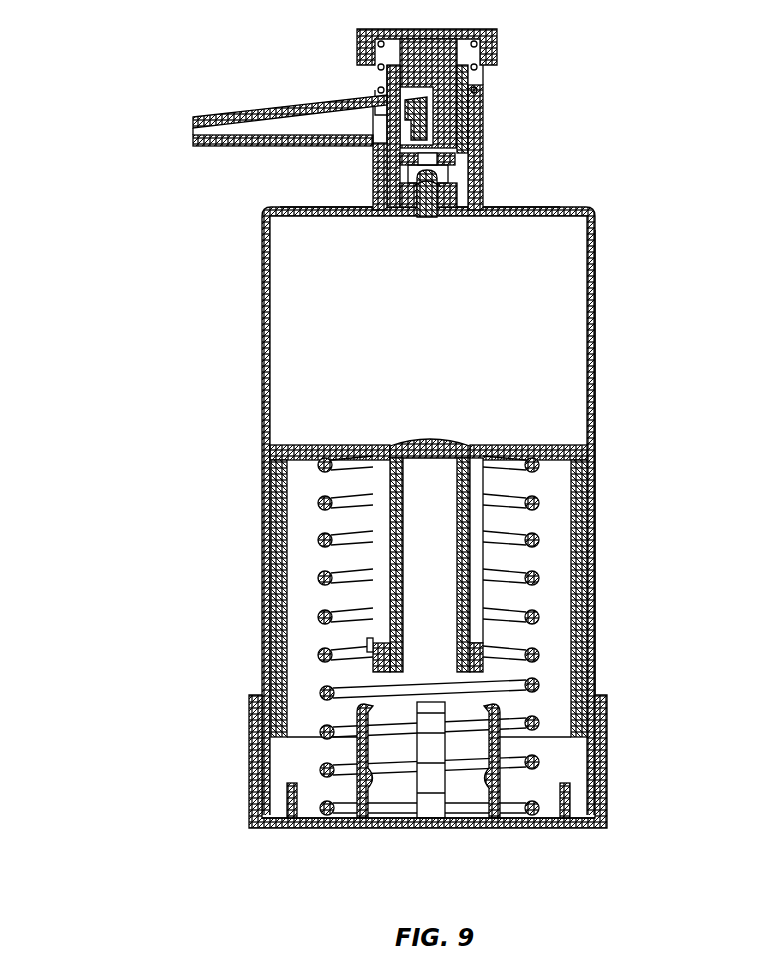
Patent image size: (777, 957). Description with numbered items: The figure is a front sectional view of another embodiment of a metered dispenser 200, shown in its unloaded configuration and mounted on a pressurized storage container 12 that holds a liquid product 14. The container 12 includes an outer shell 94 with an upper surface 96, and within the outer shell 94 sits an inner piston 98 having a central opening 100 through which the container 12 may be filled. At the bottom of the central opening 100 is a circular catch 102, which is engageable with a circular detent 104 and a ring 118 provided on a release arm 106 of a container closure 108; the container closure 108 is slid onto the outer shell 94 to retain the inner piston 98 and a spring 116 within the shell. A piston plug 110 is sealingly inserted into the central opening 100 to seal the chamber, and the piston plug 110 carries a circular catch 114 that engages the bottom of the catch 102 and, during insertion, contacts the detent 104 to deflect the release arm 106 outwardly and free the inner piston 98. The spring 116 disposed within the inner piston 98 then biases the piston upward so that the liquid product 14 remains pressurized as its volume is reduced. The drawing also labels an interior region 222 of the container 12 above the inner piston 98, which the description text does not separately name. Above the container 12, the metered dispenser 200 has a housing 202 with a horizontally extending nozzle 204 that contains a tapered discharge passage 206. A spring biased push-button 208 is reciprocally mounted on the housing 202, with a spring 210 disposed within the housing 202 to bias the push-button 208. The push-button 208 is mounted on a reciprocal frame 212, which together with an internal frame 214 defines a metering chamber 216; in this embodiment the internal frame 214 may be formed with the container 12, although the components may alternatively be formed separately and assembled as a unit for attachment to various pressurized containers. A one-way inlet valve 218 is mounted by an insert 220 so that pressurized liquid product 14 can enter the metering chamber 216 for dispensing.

The metered dispenser 200 is at (158, 42).
The pressurized storage container 12 is at (262, 297).
The liquid product 14 is at (436, 366).
The outer shell 94 is at (598, 315).
The upper surface 96 is at (571, 207).
The inner piston 98 is at (300, 448).
The central opening 100 is at (520, 480).
The circular catch 102 is at (368, 645).
The circular detent 104 is at (375, 772).
The release arm 106 is at (587, 727).
The container closure 108 is at (322, 828).
The piston plug 110 is at (428, 441).
The circular catch 114 is at (480, 668).
The spring 116 is at (538, 572).
The ring 118 is at (327, 693).
The housing 202 is at (475, 147).
The horizontally extending nozzle 204 is at (238, 147).
The tapered discharge passage 206 is at (325, 123).
The spring biased push-button 208 is at (377, 24).
The spring 210 is at (470, 65).
The reciprocal frame 212 is at (440, 40).
The internal frame 214 is at (470, 107).
The metering chamber 216 is at (374, 150).
The one-way inlet valve 218 is at (423, 197).
The insert 220 is at (447, 193).
The chamber 222 is at (452, 308).